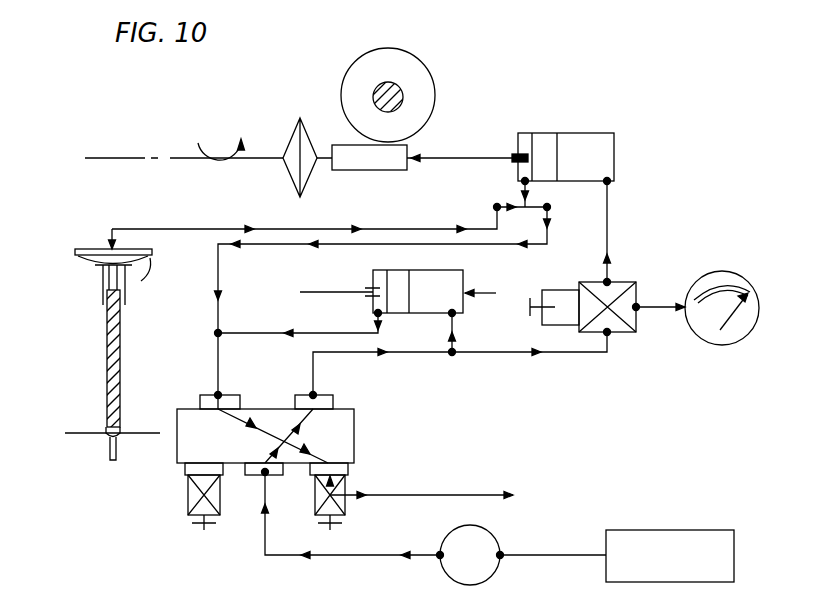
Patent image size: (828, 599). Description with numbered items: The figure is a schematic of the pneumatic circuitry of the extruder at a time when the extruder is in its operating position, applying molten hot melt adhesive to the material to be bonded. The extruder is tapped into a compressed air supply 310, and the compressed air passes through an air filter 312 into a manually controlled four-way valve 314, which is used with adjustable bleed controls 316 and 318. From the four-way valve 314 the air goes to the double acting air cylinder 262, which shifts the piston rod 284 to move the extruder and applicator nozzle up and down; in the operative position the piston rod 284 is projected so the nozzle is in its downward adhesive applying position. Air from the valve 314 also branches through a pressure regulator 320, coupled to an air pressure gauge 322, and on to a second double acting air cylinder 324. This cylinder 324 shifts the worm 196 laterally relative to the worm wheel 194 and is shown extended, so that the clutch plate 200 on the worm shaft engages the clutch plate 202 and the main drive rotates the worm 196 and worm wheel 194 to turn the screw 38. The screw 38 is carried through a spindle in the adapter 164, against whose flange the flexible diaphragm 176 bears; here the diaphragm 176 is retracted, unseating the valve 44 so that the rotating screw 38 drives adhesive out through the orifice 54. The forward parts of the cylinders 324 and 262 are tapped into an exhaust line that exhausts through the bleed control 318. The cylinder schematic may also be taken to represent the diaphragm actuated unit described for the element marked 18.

The workpiece holder 18 is at (88, 248).
The screw 38 is at (401, 88).
The valve 44 is at (124, 428).
The orifice 54 is at (112, 462).
The adapter 164 is at (102, 288).
The flexible diaphragm 176 is at (161, 279).
The worm wheel 194 is at (435, 108).
The worm 196 is at (389, 172).
The clutch plate 200 is at (316, 108).
The clutch plate 202 is at (289, 146).
The double acting air cylinder 262 is at (421, 316).
The piston rod 284 is at (346, 292).
The compressed air supply 310 is at (655, 530).
The air filter 312 is at (494, 536).
The four-way valve 314 is at (355, 440).
The adjustable bleed control 316 is at (188, 503).
The adjustable bleed control 318 is at (343, 505).
The pressure regulator 320 is at (626, 286).
The air pressure gauge 322 is at (745, 256).
The double acting air cylinder 324 is at (581, 132).